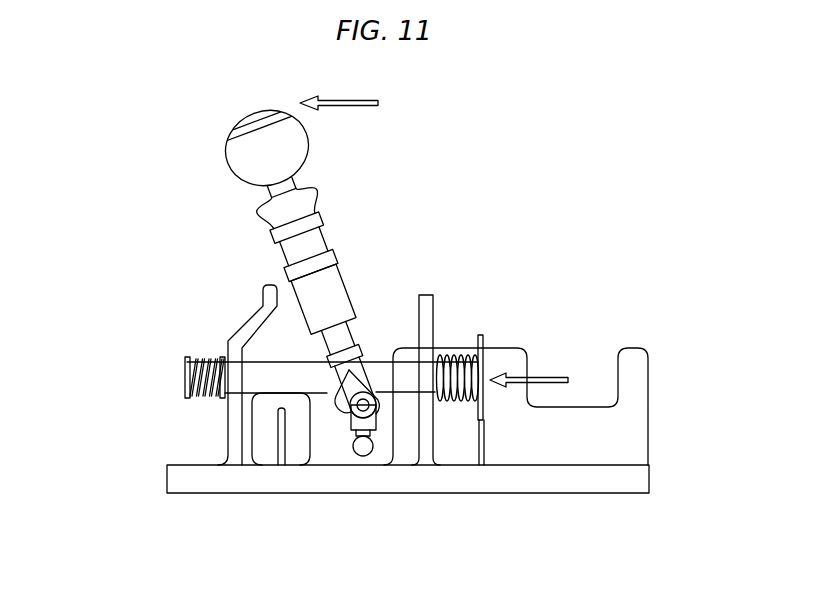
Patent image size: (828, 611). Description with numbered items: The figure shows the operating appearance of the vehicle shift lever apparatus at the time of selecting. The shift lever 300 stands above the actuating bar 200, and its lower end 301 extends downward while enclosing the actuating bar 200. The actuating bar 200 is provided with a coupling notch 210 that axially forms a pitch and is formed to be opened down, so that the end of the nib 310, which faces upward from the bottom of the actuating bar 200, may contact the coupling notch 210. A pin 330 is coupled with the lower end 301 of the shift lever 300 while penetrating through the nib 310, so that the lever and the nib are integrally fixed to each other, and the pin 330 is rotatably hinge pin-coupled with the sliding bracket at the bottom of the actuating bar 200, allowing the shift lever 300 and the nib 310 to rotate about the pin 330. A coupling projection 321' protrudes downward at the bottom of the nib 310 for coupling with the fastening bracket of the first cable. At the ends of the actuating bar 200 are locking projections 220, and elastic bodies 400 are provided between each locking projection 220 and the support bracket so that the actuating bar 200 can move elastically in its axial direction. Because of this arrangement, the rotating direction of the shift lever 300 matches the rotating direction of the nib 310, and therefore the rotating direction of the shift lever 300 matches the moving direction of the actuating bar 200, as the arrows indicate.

The actuating bar 200 is at (250, 387).
The coupling notch 210 is at (312, 378).
The locking projection 220 is at (483, 362).
The shift lever 300 is at (268, 220).
The lower end of the shift lever 301 is at (358, 375).
The nib 310 is at (380, 382).
The coupling projection 321' is at (357, 498).
The pin 330 is at (334, 413).
The elastic body 400 is at (194, 358).